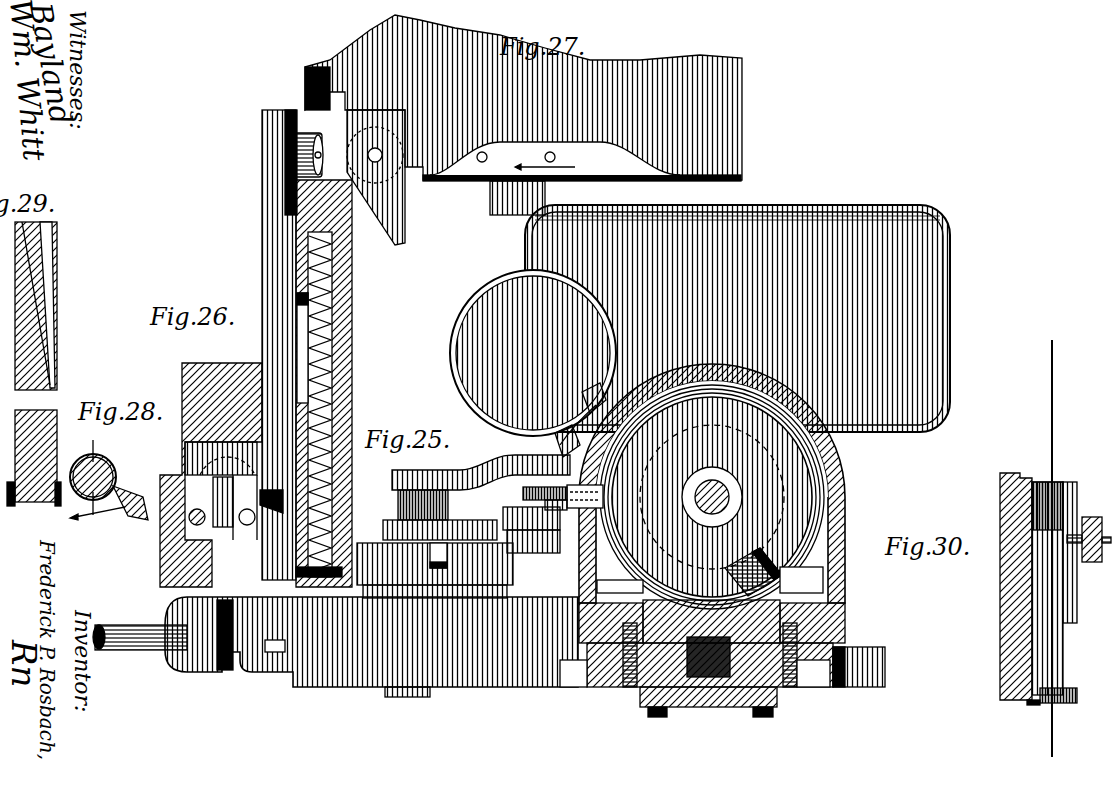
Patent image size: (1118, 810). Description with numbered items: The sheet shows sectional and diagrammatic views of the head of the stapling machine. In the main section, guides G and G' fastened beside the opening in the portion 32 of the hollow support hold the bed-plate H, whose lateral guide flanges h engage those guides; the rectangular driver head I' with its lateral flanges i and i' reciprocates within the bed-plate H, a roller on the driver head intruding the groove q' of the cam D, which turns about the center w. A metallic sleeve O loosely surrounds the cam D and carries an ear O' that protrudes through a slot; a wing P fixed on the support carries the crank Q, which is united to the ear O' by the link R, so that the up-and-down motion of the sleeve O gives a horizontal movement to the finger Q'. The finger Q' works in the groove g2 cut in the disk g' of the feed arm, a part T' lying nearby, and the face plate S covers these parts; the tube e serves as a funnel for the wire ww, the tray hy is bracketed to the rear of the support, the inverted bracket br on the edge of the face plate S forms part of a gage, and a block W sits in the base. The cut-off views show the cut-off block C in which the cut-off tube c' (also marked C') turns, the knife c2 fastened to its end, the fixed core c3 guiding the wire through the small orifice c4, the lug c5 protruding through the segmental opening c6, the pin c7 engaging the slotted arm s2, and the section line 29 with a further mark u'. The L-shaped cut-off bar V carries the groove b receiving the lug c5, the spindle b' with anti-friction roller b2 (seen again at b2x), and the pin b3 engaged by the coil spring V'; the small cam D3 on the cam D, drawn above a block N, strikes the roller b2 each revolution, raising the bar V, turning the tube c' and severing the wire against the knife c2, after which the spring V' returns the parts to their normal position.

In FIG. 27, the cam D is at (523, 98).
In FIG. 25, the cam D is at (712, 497).
In FIG. 27, the small cam D3 is at (528, 165).
In FIG. 27, the block N is at (517, 198).
In FIG. 27, the cut-off bar V is at (376, 177).
In FIG. 26, the cut-off bar V is at (263, 345).
In FIG. 26, the coil spring V' is at (339, 383).
In FIG. 26, the groove b is at (257, 555).
In FIG. 27, the spindle b' is at (365, 51).
In FIG. 27, the anti-friction roller b2 is at (322, 135).
In FIG. 27, the roller b2x is at (385, 120).
In FIG. 26, the pin b3 is at (302, 402).
In FIG. 27, the groove g2 is at (470, 150).
In FIG. 25, the groove g2 is at (440, 560).
In FIG. 25, the disk g' is at (465, 592).
In FIG. 26, the face plate S is at (211, 475).
In FIG. 25, the face plate S is at (715, 708).
In FIG. 30, the face plate S is at (1000, 600).
In FIG. 26, the cut-off block C is at (207, 457).
In FIG. 30, the cut-off block C is at (1065, 588).
In FIG. 30, the cut-off tube C' is at (1069, 490).
In FIG. 26, the cut-off tube c' is at (272, 437).
In FIG. 28, the cut-off tube c' is at (124, 466).
In FIG. 29, the cut-off tube c' is at (17, 483).
In FIG. 26, the knife c2 is at (198, 502).
In FIG. 30, the knife c2 is at (1048, 708).
In FIG. 28, the fixed core c3 is at (93, 477).
In FIG. 29, the fixed core c3 is at (8, 340).
In FIG. 26, the orifice c4 is at (239, 507).
In FIG. 28, the orifice c4 is at (73, 525).
In FIG. 26, the lug c5 is at (258, 480).
In FIG. 28, the lug c5 is at (132, 507).
In FIG. 30, the lug c5 is at (1078, 697).
In FIG. 30, the segmental opening c6 is at (1038, 703).
In FIG. 30, the pin c7 is at (1095, 518).
In FIG. 28, the section line 29 is at (100, 522).
In FIG. 29, the part u' is at (10, 407).
In FIG. 25, the tray hy is at (700, 320).
In FIG. 25, the sleeve O is at (725, 477).
In FIG. 25, the ear O' is at (563, 487).
In FIG. 25, the shaft w is at (712, 482).
In FIG. 25, the groove q' is at (753, 552).
In FIG. 25, the wing P is at (532, 455).
In FIG. 25, the crank Q is at (476, 504).
In FIG. 25, the finger Q' is at (435, 544).
In FIG. 25, the link R is at (530, 540).
In FIG. 25, the plate T' is at (521, 584).
In FIG. 25, the portion of hollow metal support 32 is at (555, 560).
In FIG. 25, the tube e is at (142, 626).
In FIG. 25, the guide flange h is at (625, 625).
In FIG. 25, the driver head I' is at (710, 643).
In FIG. 25, the block W is at (708, 657).
In FIG. 25, the flange i is at (634, 655).
In FIG. 25, the flange i' is at (778, 655).
In FIG. 25, the guide G is at (668, 688).
In FIG. 25, the guide G' is at (813, 688).
In FIG. 25, the inverted bracket br is at (886, 667).
In FIG. 25, the bed-plate H is at (735, 569).
In FIG. 30, the wire ww is at (1050, 387).
In FIG. 30, the arm s2 is at (1089, 553).